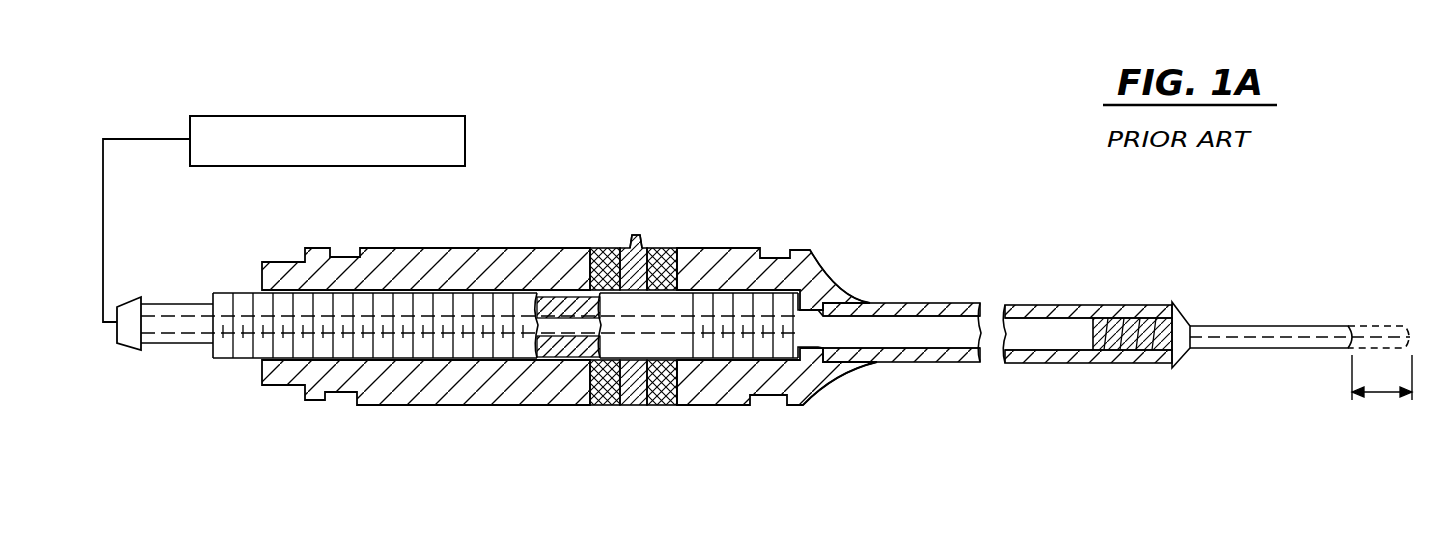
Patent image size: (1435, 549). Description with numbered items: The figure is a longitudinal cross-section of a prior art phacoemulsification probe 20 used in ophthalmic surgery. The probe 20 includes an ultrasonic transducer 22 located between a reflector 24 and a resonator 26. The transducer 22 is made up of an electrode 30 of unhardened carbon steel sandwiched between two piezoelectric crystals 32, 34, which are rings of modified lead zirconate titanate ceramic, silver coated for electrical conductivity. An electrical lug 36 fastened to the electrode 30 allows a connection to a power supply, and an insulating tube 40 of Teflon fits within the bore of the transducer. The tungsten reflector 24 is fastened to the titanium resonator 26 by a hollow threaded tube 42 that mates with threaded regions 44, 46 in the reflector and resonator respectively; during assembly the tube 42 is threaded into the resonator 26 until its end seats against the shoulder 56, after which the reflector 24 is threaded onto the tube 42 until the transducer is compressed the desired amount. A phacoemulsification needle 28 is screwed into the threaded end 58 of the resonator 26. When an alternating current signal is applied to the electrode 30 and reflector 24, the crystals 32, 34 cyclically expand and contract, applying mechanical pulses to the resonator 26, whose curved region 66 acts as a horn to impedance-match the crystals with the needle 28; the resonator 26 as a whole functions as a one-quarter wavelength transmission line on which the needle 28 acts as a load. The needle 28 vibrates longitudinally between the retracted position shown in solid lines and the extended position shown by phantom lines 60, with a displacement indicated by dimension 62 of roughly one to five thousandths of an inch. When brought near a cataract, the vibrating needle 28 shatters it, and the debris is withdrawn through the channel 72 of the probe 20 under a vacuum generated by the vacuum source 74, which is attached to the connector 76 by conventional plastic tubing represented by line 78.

The phaco probe 20 is at (930, 225).
The ultrasonic transducer 22 is at (616, 333).
The reflector 24 is at (515, 248).
The resonator 26 is at (843, 268).
The phacoemulsification needle 28 is at (1273, 326).
The electrode 30 is at (628, 407).
The piezoelectric crystal 32 is at (600, 407).
The piezoelectric crystal 34 is at (658, 407).
The electrical lug 36 is at (643, 245).
The insulating tube 40 is at (668, 352).
The hollow threaded tube 42 is at (243, 293).
The threaded region 44 is at (360, 364).
The threaded region 46 is at (753, 407).
The shoulder 56 is at (840, 304).
The threaded end 58 is at (1092, 368).
The phantom lines 60 is at (1382, 327).
The dimension 62 is at (1377, 395).
The curved region 66 is at (832, 385).
The channel 72 is at (962, 342).
The vacuum source 74 is at (355, 116).
The connector 76 is at (128, 302).
The line 78 is at (103, 198).